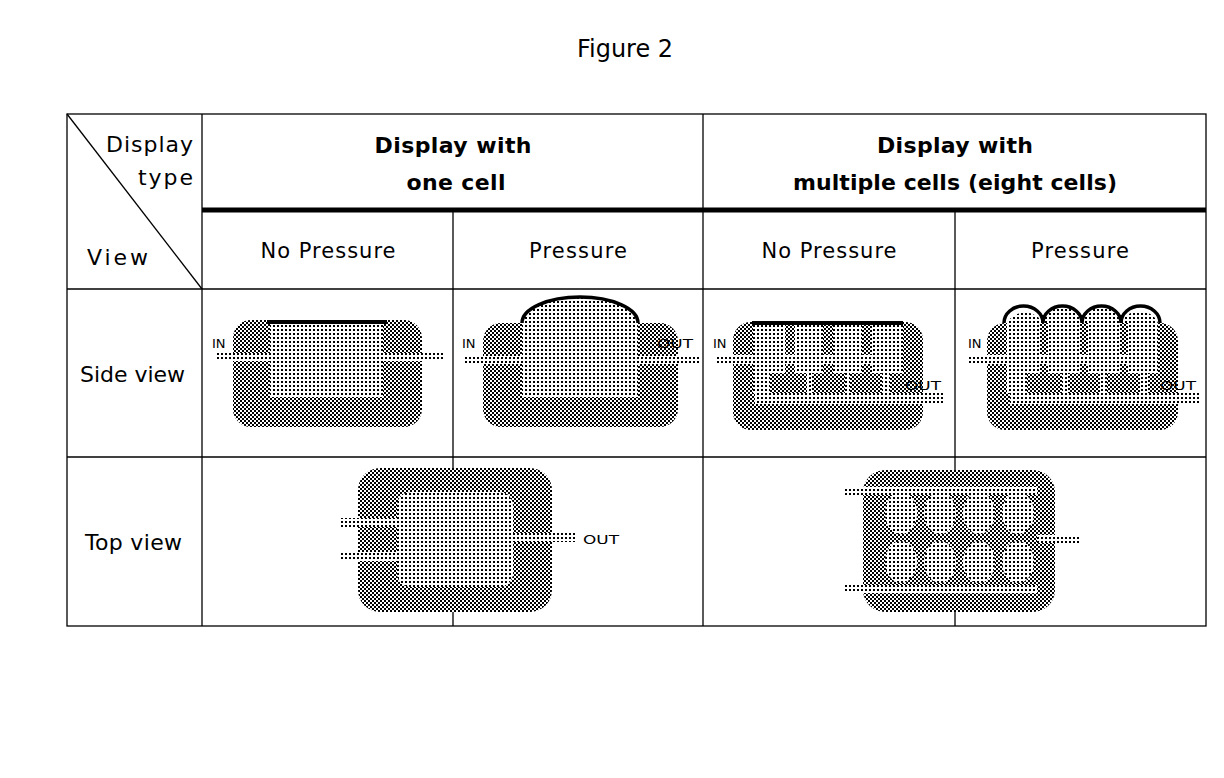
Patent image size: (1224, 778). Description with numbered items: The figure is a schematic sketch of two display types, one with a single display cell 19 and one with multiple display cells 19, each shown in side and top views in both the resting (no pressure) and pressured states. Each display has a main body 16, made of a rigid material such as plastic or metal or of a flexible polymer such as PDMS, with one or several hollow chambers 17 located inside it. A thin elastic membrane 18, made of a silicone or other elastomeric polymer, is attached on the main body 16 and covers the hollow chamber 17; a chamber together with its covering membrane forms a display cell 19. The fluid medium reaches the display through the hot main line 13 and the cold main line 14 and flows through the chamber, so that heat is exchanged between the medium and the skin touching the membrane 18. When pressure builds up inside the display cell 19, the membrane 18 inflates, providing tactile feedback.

The hot main line 13 is at (360, 523).
The cold main line 14 is at (390, 562).
The main body 16 is at (498, 407).
The hollow chamber 17 is at (600, 378).
The elastic membrane 18 is at (330, 322).
The display cell 19 is at (943, 585).